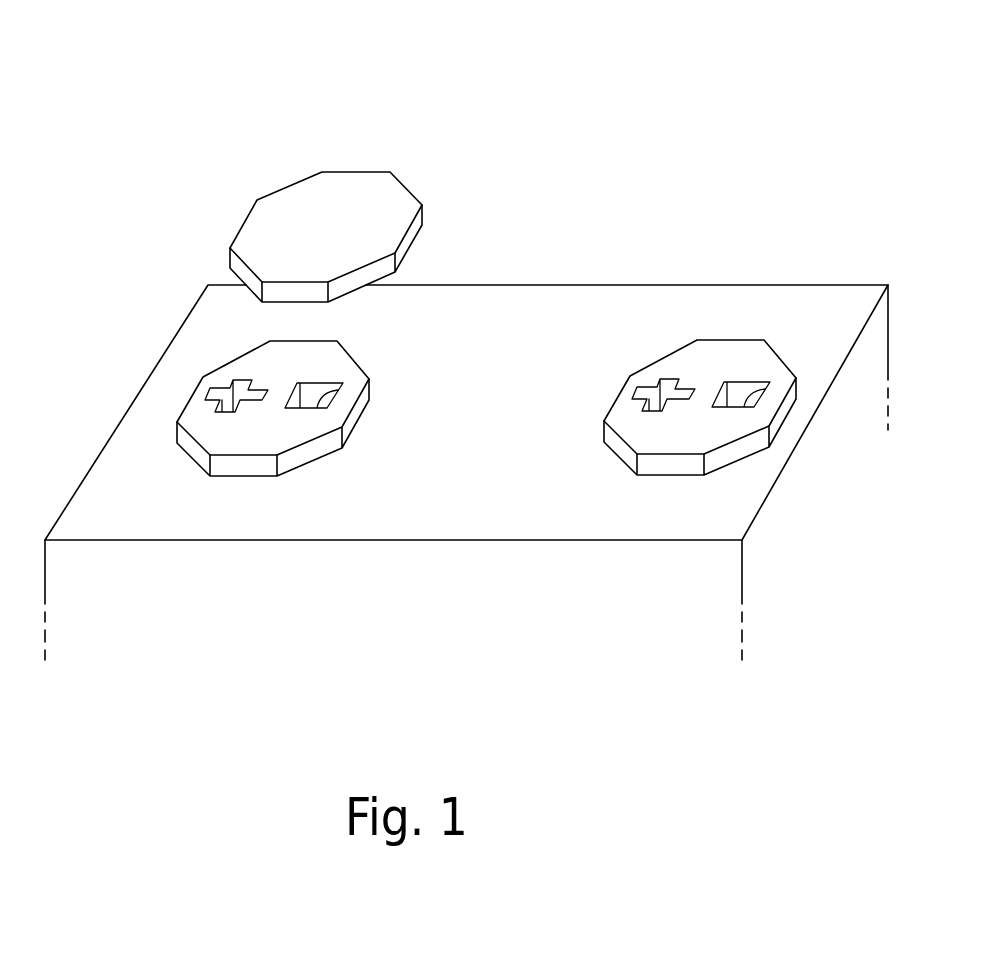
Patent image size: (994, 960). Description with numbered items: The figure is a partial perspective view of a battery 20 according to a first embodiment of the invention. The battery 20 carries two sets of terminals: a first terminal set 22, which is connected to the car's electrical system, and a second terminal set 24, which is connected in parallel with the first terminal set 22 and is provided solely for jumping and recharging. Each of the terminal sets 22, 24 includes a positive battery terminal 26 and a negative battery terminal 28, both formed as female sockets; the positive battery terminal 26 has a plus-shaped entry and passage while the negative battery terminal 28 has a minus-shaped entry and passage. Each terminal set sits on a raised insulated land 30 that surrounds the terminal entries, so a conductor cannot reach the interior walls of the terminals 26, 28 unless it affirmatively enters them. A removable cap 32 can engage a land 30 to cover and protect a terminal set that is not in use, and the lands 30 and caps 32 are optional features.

The battery 20 is at (634, 88).
The first terminal set 22 is at (675, 362).
The second terminal set 24 is at (250, 443).
The positive battery terminal 26 is at (205, 388).
The negative battery terminal 28 is at (335, 392).
The raised insulated land 30 is at (260, 362).
The removable cap 32 is at (303, 198).